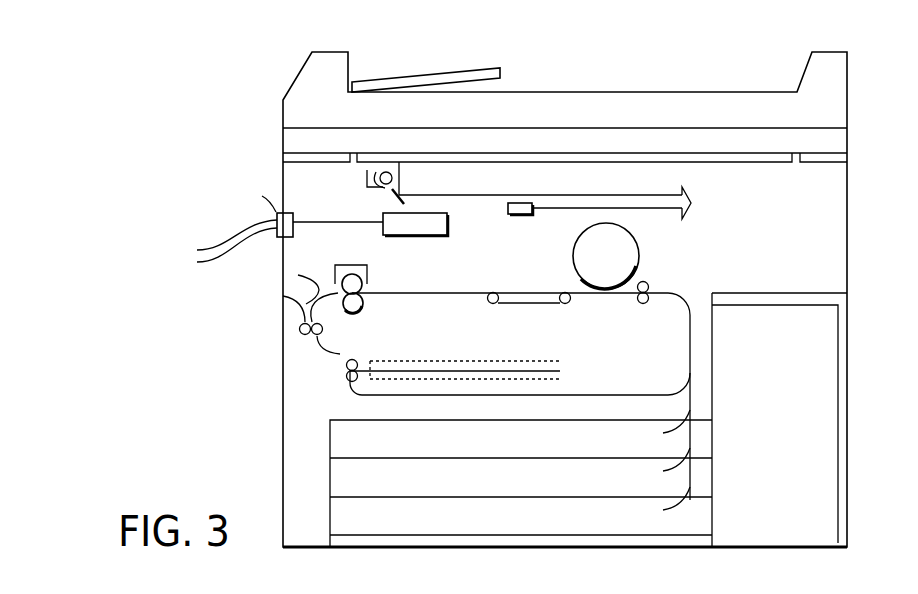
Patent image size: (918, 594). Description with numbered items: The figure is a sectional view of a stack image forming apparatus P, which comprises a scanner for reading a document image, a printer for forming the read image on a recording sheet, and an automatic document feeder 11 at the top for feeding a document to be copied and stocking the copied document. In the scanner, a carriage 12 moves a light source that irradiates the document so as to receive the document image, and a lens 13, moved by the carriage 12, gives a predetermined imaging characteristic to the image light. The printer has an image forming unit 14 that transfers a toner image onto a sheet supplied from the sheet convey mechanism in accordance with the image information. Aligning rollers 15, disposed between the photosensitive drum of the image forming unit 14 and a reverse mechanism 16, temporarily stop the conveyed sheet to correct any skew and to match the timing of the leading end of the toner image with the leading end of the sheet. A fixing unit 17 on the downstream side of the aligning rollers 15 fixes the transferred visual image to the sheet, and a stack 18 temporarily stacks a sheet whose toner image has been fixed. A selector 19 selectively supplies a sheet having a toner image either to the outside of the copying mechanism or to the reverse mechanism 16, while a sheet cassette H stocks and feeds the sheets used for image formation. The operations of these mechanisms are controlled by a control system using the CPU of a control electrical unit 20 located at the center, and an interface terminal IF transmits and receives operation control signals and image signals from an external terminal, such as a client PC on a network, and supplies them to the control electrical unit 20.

The stack image forming apparatus P is at (616, 71).
The automatic document feeder 11 is at (356, 64).
The carriage 12 is at (360, 187).
The lens 13 is at (503, 213).
The image forming unit 14 is at (646, 246).
The aligning rollers 15 is at (666, 284).
The reverse mechanism 16 is at (480, 307).
The fixing unit 17 is at (378, 272).
The stack 18 is at (565, 358).
The selector 19 is at (294, 341).
The control electrical unit 20 is at (382, 233).
The sheet cassette H is at (330, 441).
The interface terminal IF is at (205, 223).